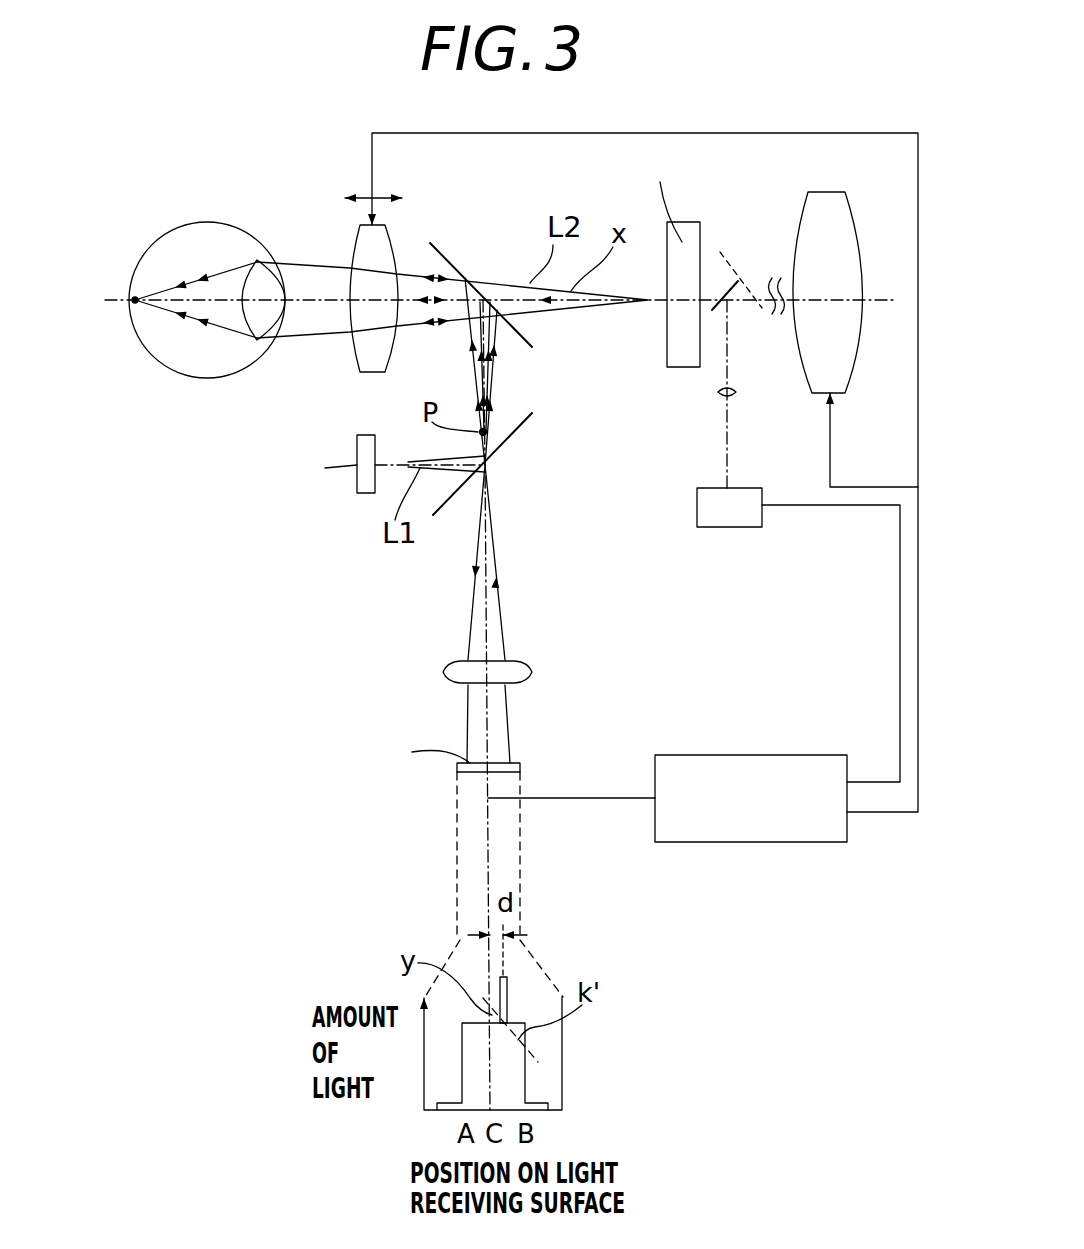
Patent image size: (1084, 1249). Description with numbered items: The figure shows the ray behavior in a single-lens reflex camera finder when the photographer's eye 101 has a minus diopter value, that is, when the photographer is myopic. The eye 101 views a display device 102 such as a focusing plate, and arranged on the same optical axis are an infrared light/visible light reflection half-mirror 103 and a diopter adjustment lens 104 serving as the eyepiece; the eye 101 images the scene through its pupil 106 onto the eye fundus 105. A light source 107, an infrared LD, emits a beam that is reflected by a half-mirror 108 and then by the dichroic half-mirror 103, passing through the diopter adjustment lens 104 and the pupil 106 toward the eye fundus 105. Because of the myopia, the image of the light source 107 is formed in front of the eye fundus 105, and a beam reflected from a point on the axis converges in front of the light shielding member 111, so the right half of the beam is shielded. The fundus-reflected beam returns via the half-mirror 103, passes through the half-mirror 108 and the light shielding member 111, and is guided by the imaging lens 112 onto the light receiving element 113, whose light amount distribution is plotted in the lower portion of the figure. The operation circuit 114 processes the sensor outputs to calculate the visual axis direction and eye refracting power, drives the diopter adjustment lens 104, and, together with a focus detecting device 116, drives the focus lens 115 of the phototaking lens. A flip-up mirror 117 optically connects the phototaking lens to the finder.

The eye 101 is at (193, 248).
The display device 102 is at (682, 352).
The infrared light/visible light reflection half-mirror 103 is at (445, 262).
The diopter adjustment lens 104 is at (385, 247).
The eye fundus 105 is at (133, 303).
The pupil 106 is at (247, 335).
The light source 107 is at (360, 495).
The half-mirror 108 is at (508, 440).
The light shielding member 111 is at (490, 603).
The imaging lens 112 is at (515, 670).
The light receiving element 113 is at (510, 765).
The operation circuit 114 is at (753, 755).
The focus lens 115 is at (843, 362).
The focus detecting device 116 is at (729, 507).
The flip-up mirror 117 is at (728, 268).